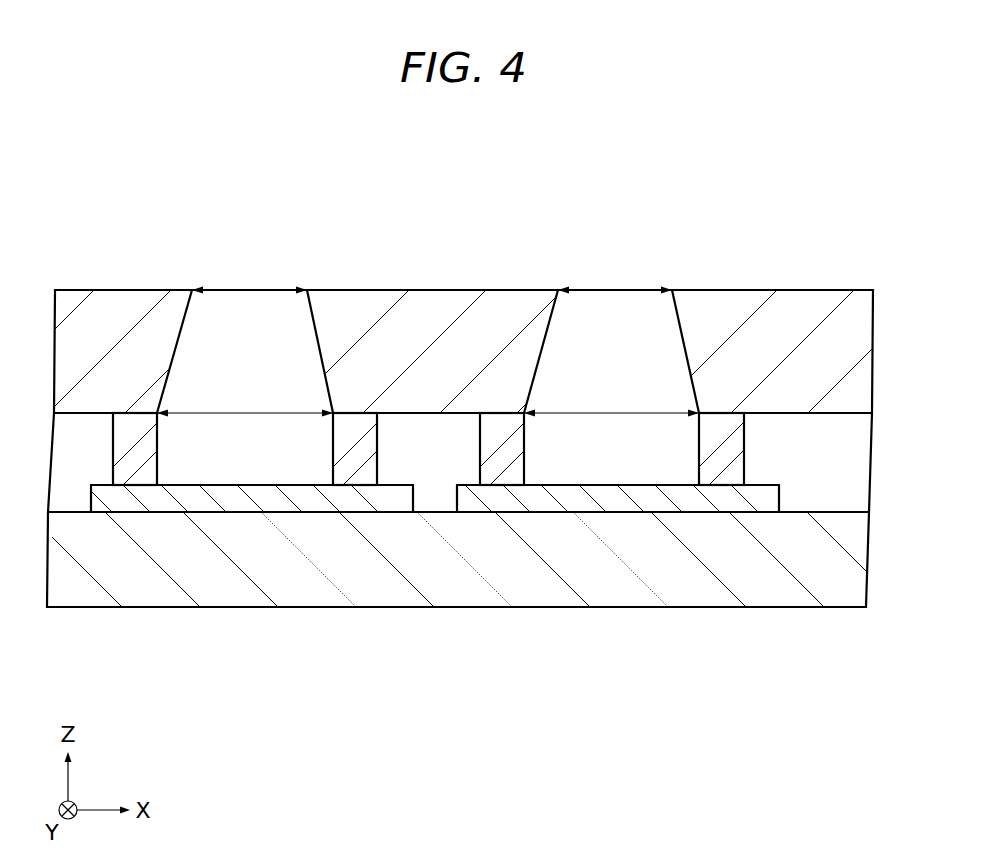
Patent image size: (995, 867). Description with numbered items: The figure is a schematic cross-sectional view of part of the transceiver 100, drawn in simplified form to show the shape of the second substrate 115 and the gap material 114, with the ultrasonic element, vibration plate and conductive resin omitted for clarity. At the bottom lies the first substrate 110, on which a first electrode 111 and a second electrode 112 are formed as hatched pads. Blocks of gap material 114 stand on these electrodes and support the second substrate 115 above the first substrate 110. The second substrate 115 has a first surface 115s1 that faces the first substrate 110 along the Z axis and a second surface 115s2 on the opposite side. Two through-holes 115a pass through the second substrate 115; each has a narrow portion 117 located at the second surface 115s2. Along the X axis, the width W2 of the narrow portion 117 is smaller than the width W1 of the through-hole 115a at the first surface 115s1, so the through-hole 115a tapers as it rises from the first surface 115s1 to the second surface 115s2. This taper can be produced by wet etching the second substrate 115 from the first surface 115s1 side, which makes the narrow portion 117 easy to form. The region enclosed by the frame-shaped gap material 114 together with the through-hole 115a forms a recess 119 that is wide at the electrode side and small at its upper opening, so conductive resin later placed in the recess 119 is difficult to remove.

The transceiver 100 is at (786, 165).
The first substrate 110 is at (433, 593).
The first electrode 111 is at (625, 502).
The second electrode 112 is at (237, 502).
The gap material 114 is at (137, 470).
The second substrate 115 is at (497, 405).
The through-hole 115a is at (309, 301).
The first surface 115s1 is at (397, 419).
The second surface 115s2 is at (466, 290).
The narrow portion 117 is at (190, 298).
The recess 119 is at (257, 308).
The width of the through-hole in the first surface W1 is at (248, 418).
The width of the narrow portion W2 is at (229, 294).